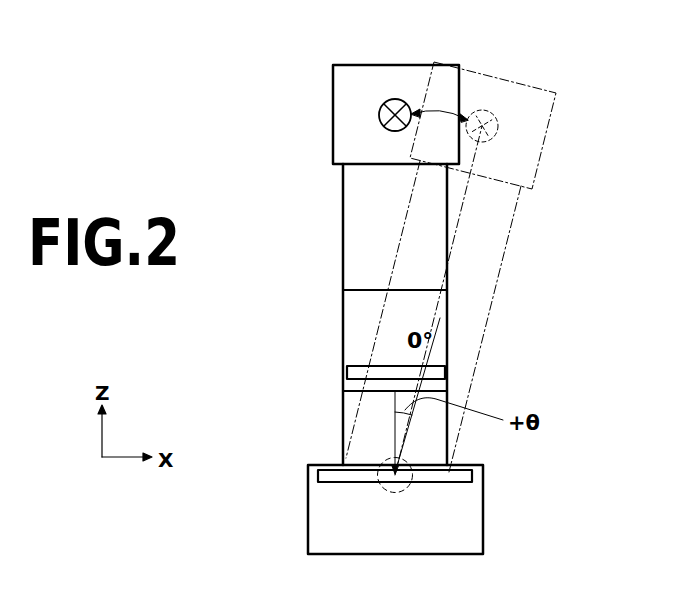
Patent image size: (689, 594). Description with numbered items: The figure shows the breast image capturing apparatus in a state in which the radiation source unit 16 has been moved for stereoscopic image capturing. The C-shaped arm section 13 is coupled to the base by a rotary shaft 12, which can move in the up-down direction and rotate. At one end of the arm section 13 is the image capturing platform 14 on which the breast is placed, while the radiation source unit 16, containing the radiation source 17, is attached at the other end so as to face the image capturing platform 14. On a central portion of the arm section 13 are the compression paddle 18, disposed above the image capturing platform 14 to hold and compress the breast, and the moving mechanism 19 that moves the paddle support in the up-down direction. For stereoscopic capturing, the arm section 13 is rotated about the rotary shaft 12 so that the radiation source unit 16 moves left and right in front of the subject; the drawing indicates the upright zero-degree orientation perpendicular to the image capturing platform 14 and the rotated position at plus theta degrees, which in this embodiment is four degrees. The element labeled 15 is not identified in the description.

The rotary shaft 12 is at (384, 493).
The arm section 13 is at (507, 250).
The image capturing platform 14 is at (483, 503).
The slide rail 15 is at (470, 474).
The radiation source unit 16 is at (352, 64).
The radiation source 17 is at (398, 99).
The compression paddle 18 is at (448, 371).
The moving mechanism 19 is at (342, 314).